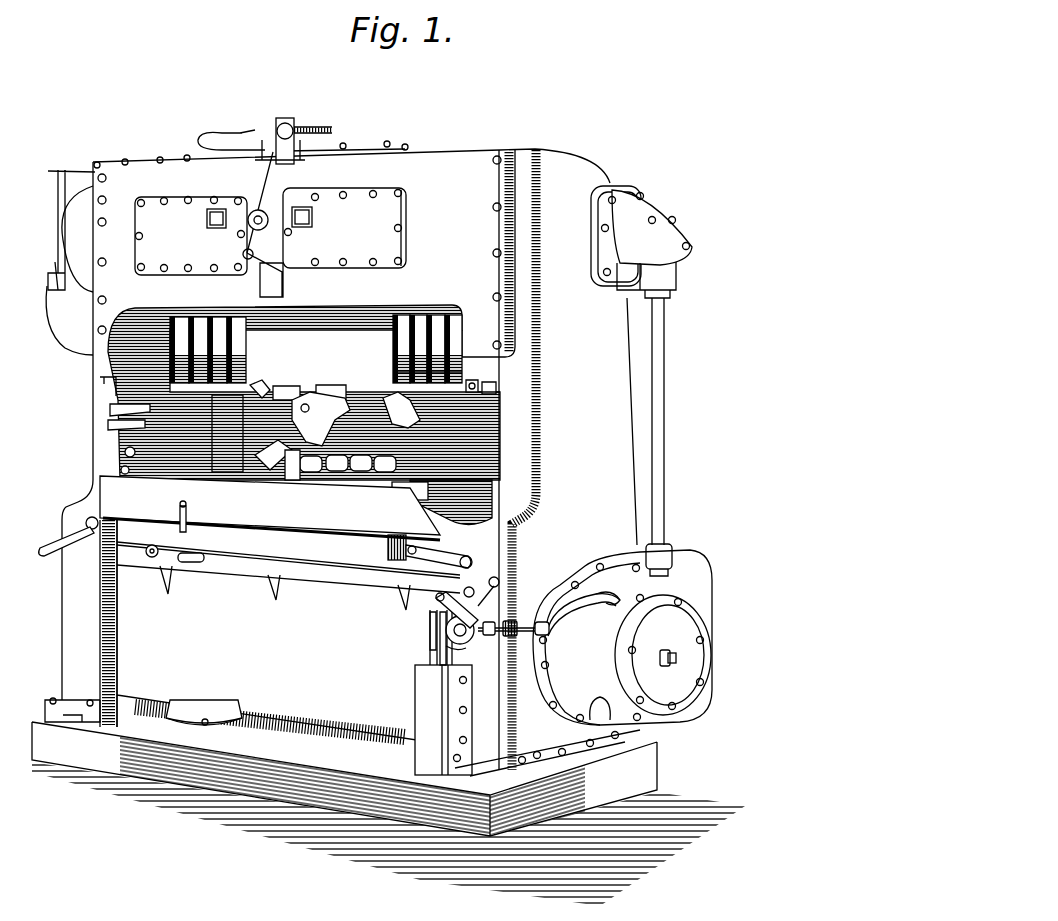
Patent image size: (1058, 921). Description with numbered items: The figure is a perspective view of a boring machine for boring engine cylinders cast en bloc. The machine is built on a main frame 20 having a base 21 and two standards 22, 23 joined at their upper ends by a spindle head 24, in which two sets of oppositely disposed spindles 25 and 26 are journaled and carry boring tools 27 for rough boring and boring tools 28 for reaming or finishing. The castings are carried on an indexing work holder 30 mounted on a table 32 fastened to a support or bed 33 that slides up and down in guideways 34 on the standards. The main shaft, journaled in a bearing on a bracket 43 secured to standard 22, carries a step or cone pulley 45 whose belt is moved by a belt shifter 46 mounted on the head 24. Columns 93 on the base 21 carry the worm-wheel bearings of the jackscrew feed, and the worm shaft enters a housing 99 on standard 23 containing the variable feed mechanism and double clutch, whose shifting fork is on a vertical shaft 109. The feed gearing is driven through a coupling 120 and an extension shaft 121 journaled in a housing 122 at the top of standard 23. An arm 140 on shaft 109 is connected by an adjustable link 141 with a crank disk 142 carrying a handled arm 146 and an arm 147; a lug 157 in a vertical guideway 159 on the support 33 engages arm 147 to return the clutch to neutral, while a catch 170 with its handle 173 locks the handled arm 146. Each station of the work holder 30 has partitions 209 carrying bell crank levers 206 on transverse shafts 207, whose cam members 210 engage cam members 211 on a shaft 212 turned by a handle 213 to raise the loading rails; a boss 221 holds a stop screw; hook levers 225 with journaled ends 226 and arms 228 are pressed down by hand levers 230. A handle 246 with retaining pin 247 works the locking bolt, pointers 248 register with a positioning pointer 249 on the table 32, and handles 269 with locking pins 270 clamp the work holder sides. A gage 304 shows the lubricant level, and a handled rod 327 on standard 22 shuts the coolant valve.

The main frame 20 is at (333, 459).
The base 21 is at (36, 741).
The standard 22 is at (62, 596).
The standard 23 is at (514, 540).
The spindle head 24 is at (468, 158).
The spindles 25 is at (240, 346).
The spindles 26 is at (393, 347).
The boring tools 27 is at (256, 384).
The boring tools 28 is at (393, 376).
The indexing work holder 30 is at (270, 508).
The table 32 is at (245, 552).
The support or bed 33 is at (270, 681).
The guideways 34 is at (114, 656).
The bracket 43 is at (58, 318).
The step or cone pulley 45 is at (66, 237).
The belt shifter 46 is at (244, 140).
The columns 93 is at (206, 710).
The housing 99 is at (560, 690).
The shaft 109 is at (603, 598).
The coupling 120 is at (670, 557).
The extension shaft 121 is at (664, 427).
The housing 122 is at (612, 240).
The arm 140 is at (583, 612).
The adjustable link 141 is at (513, 622).
The crank disk 142 is at (472, 639).
The handled arm 146 is at (466, 612).
The arm 147 is at (452, 650).
The lug 157 is at (430, 630).
The vertical guideway 159 is at (438, 640).
The catch 170 is at (467, 588).
The handle 173 is at (482, 583).
The bell crank levers 206 is at (410, 491).
The transverse shafts 207 is at (350, 474).
The side walls or partitions 209 is at (194, 439).
The cam members 210 is at (392, 476).
The cam members 211 is at (362, 476).
The shaft 212 is at (375, 474).
The handle 213 is at (300, 481).
The boss 221 is at (242, 433).
The hook levers 225 is at (284, 386).
The ends 226 is at (492, 396).
The arms 228 is at (320, 386).
The hand levers 230 is at (398, 426).
The handle 246 is at (186, 562).
The retaining pin 247 is at (150, 557).
The pointers 248 is at (187, 512).
The positioning pointer 249 is at (178, 514).
The handle 269 is at (66, 538).
The locking pin 270 is at (92, 518).
The gage 304 is at (252, 273).
The handled rod 327 is at (108, 393).